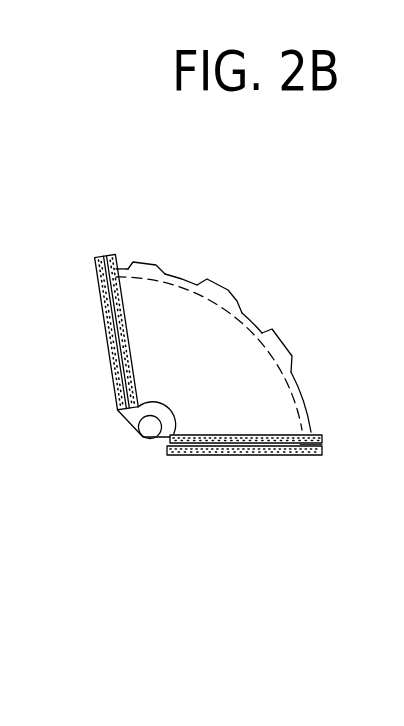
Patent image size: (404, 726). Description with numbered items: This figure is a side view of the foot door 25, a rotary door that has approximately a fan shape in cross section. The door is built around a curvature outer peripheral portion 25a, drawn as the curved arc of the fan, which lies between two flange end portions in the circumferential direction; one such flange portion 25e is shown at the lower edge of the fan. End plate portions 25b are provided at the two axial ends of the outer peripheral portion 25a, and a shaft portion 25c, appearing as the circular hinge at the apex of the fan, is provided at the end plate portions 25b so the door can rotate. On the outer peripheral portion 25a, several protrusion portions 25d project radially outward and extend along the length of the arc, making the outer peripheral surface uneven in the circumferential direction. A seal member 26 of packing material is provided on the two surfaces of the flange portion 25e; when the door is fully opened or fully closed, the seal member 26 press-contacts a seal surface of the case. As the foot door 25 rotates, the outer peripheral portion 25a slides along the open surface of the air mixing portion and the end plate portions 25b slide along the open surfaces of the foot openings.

The foot door 25 is at (262, 311).
The curvature outer peripheral portion 25a is at (297, 378).
The end plate portion 25b is at (174, 320).
The shaft portion 25c is at (148, 429).
The protrusion portion 25d is at (143, 262).
The flange portion 25e is at (323, 443).
The seal member 26 is at (281, 421).